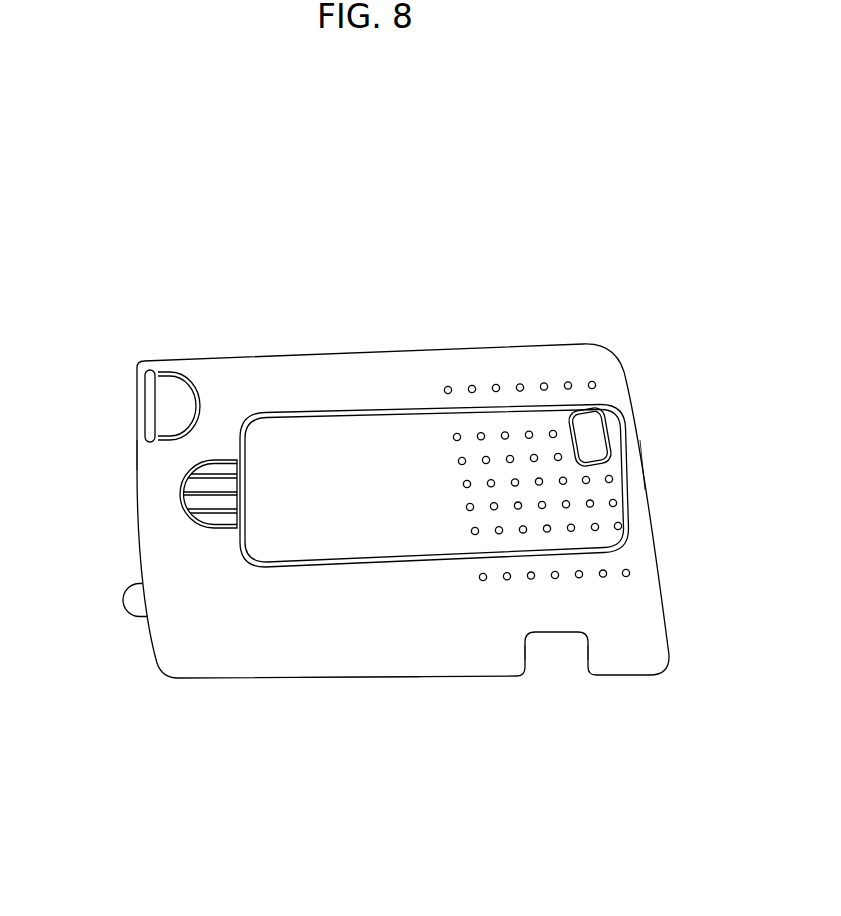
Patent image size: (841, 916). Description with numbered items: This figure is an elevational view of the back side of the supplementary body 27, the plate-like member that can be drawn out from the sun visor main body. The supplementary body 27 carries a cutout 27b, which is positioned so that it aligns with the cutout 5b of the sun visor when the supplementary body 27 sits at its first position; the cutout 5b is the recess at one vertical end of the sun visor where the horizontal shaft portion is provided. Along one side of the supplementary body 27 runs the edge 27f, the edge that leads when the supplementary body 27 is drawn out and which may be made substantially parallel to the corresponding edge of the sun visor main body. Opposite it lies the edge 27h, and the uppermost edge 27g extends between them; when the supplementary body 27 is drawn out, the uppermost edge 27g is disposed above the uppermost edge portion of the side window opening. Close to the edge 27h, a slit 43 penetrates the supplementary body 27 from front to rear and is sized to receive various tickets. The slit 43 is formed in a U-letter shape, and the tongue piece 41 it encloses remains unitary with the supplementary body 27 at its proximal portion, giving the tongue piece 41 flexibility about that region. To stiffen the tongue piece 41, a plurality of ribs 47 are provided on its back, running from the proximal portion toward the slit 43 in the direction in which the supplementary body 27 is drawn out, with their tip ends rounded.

The supplementary body 27 is at (377, 293).
The cutout 27b is at (559, 632).
The cutout 5b is at (573, 685).
The edge 27f is at (640, 460).
The uppermost edge 27g is at (362, 678).
The edge 27h is at (140, 540).
The tongue piece 41 is at (218, 468).
The slit 43 is at (180, 483).
The ribs 47 is at (208, 512).